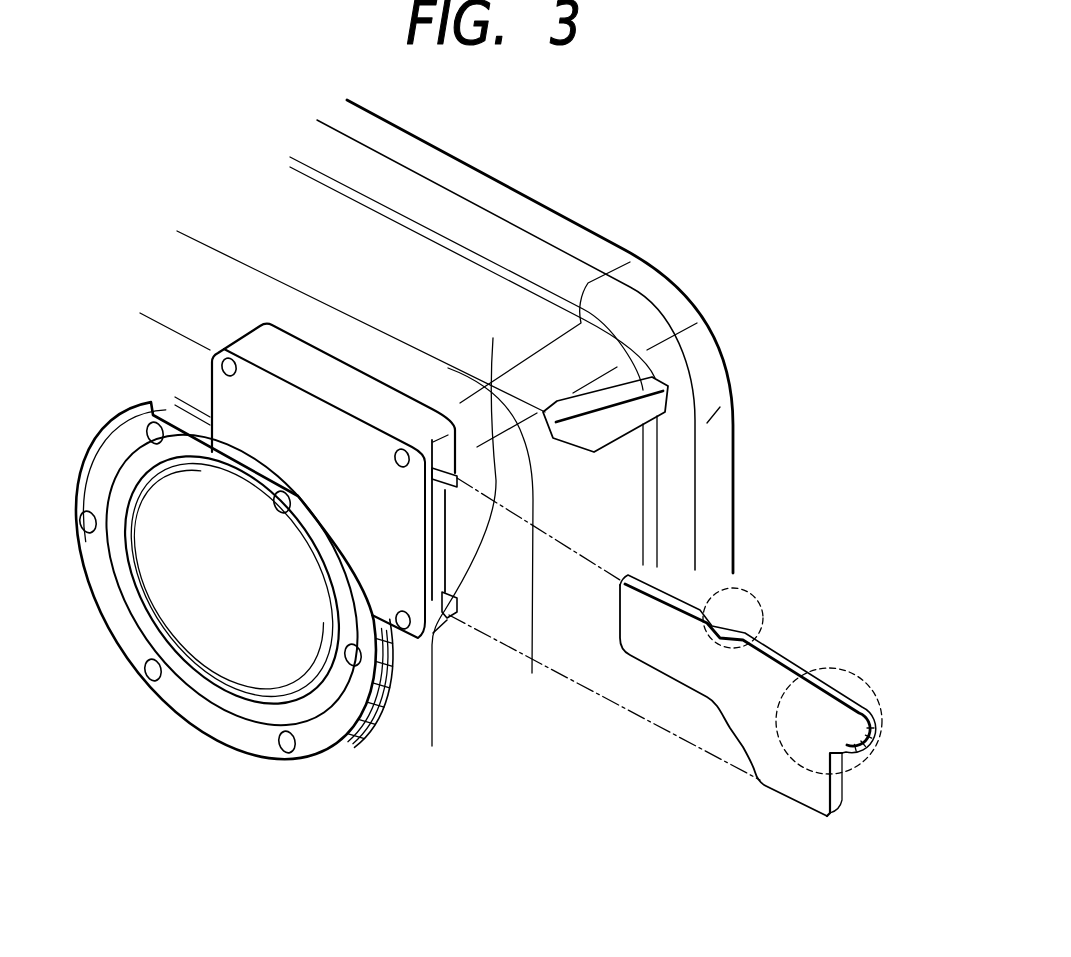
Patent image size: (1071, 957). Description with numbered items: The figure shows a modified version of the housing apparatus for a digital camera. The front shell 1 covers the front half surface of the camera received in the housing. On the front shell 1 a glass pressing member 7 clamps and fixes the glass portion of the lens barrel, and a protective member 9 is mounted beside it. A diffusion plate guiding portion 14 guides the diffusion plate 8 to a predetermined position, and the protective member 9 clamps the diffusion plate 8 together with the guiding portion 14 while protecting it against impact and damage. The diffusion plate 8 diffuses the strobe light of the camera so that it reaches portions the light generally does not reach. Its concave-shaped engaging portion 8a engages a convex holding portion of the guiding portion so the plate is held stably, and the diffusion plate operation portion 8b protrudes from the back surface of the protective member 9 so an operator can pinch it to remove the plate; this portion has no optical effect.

The front shell 1 is at (687, 293).
The glass pressing member 7 is at (185, 703).
The diffusion plate 8 is at (737, 708).
The concave-shaped engaging portion 8a is at (736, 589).
The diffusion plate operation portion 8b is at (864, 676).
The protective member 9 is at (387, 527).
The diffusion plate guiding portion 14 is at (392, 407).